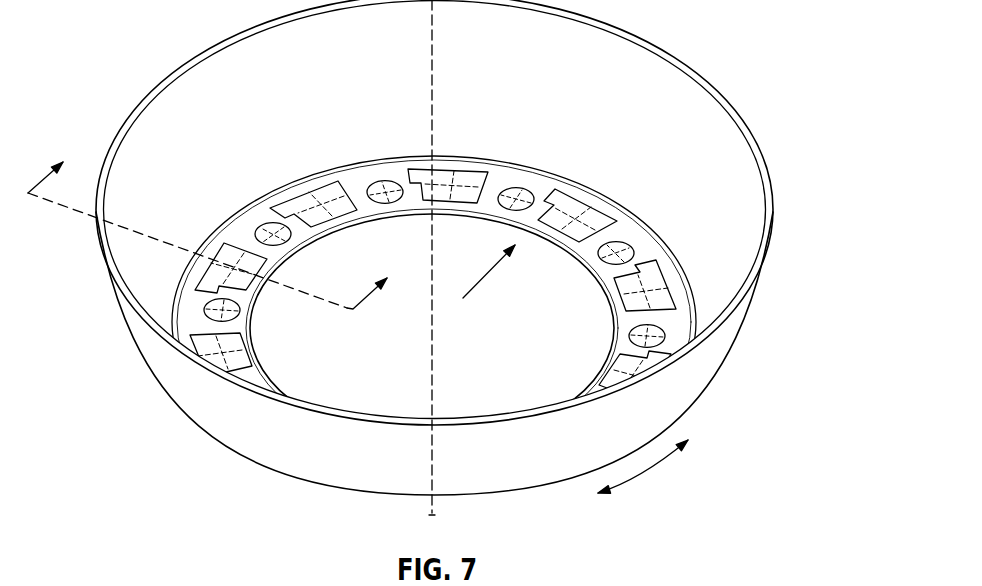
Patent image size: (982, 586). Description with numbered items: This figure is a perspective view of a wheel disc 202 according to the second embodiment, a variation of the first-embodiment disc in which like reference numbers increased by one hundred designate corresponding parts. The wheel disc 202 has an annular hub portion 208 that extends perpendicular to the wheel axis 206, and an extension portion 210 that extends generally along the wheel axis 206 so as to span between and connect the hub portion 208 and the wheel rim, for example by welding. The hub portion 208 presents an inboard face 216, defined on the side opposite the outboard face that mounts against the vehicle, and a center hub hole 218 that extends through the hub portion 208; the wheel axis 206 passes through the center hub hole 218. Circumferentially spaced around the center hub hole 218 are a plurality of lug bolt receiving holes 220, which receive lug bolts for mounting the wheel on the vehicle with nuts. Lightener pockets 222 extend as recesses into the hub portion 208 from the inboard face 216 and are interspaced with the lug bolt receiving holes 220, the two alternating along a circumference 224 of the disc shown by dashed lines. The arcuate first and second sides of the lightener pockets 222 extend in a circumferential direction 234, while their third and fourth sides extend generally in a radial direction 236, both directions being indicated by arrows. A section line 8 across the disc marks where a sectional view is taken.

The wheel disc 202 is at (472, 251).
The wheel axis 206 is at (433, 517).
The hub portion 208 is at (431, 305).
The extension portion 210 is at (748, 160).
The inboard face 216 is at (185, 312).
The center hub hole 218 is at (338, 357).
The lug bolt receiving holes 220 is at (517, 187).
The lightener pockets 222 is at (577, 202).
The circumference 224 is at (323, 203).
The circumferential direction 234 is at (648, 470).
The radial direction 236 is at (486, 282).
The section line 8- 8 is at (217, 223).